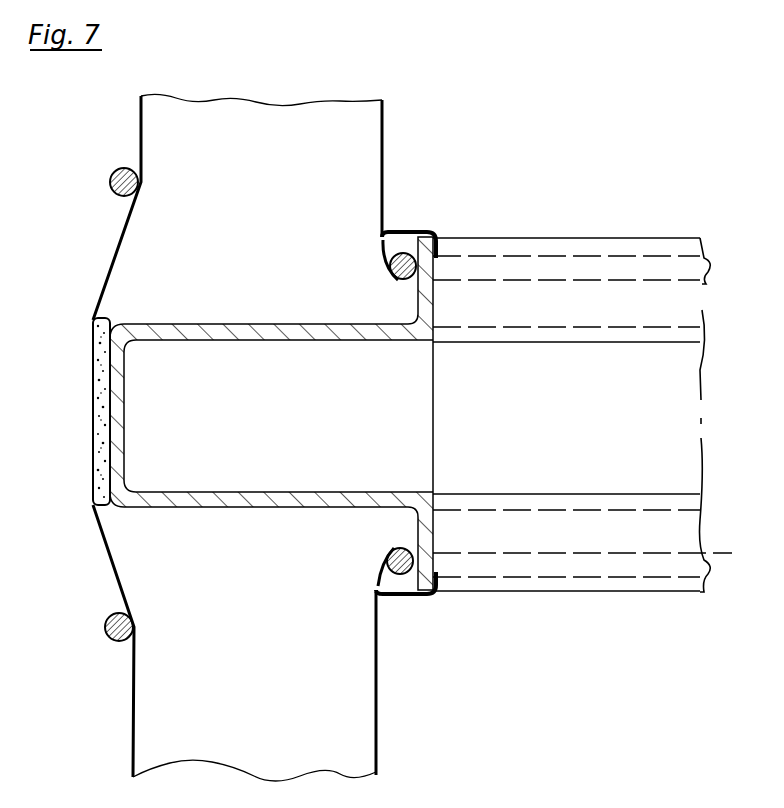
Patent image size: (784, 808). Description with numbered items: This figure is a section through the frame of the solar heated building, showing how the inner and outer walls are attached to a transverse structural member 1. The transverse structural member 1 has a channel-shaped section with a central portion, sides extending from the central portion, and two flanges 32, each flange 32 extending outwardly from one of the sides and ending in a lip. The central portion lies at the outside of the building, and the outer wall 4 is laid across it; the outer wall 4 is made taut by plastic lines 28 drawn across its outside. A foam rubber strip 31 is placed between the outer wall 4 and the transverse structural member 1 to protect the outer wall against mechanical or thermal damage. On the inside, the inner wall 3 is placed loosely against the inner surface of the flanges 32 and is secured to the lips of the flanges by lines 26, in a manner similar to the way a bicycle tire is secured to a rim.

The transverse structural member 1 is at (233, 498).
The inner wall 3 is at (385, 180).
The outer wall 4 is at (140, 128).
The line 26 is at (403, 574).
The plastic line 28 is at (110, 184).
The foam rubber strip 31 is at (97, 409).
The flange 32 is at (425, 240).